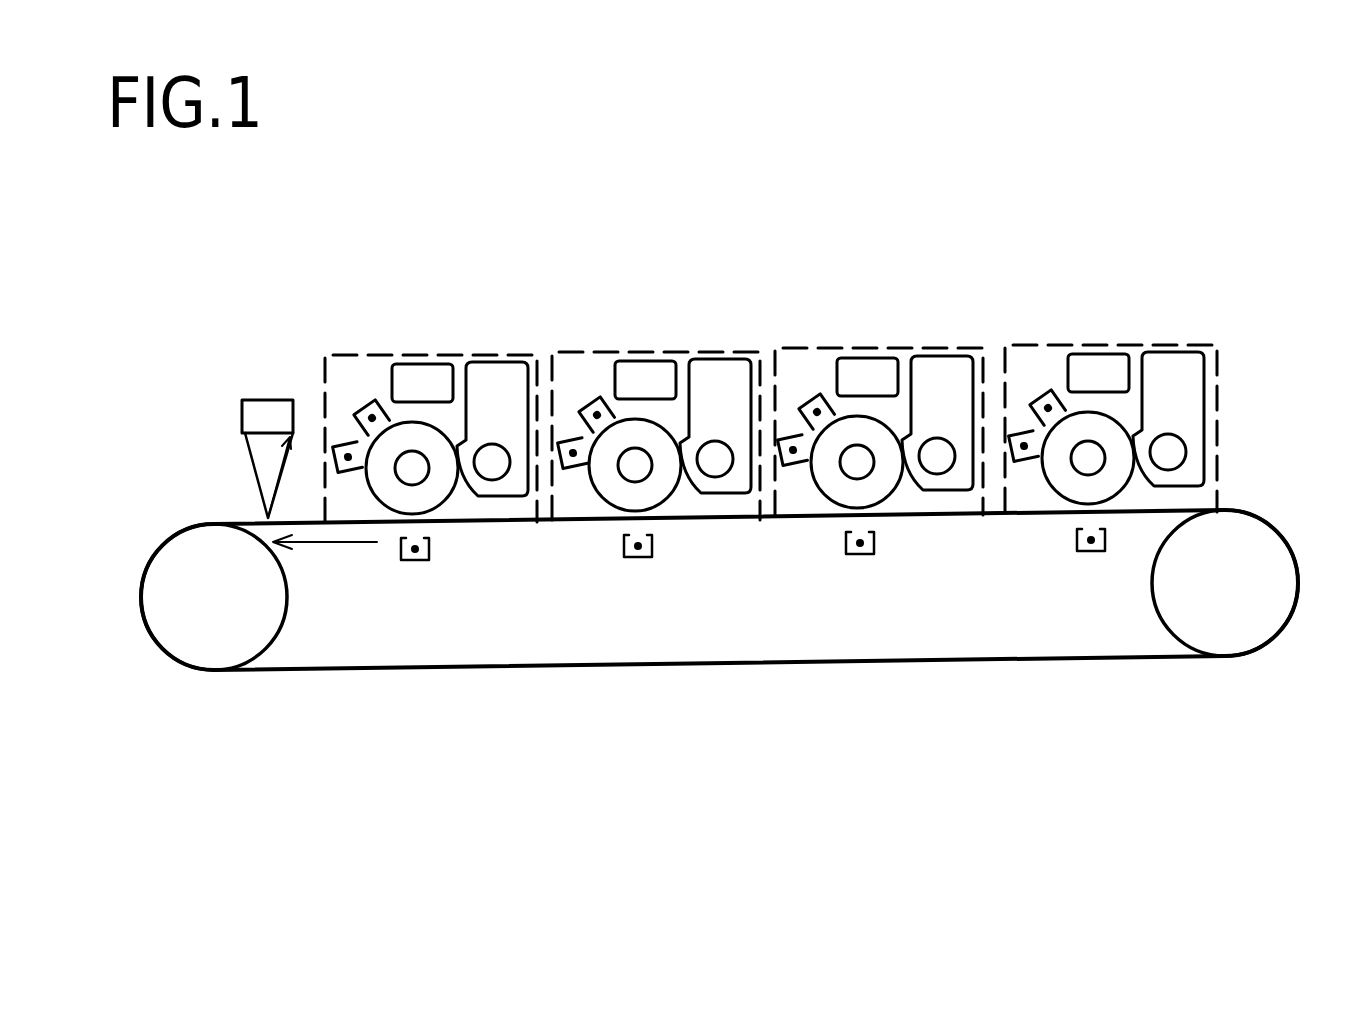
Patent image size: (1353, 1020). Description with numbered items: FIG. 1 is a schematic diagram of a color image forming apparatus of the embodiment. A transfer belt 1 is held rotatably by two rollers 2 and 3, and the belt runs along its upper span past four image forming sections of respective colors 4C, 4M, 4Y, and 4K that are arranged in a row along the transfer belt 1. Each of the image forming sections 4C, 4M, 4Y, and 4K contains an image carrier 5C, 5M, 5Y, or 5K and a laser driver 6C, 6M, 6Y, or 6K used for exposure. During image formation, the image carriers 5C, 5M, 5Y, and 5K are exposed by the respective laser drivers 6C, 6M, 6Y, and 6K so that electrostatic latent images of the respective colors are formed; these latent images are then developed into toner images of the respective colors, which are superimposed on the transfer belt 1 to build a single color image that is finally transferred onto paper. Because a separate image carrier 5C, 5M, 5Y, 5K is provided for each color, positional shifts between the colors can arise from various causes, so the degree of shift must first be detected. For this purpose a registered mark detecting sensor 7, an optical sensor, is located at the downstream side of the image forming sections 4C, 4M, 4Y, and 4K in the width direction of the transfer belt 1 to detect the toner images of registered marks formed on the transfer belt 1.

The transfer belt 1 is at (1083, 658).
The roller 2 is at (190, 630).
The roller 3 is at (1273, 598).
The image forming section 4C is at (430, 353).
The image forming section 4M is at (652, 352).
The image forming section 4Y is at (875, 347).
The image forming section 4K is at (1217, 345).
The image carrier 5C is at (409, 433).
The image carrier 5M is at (633, 430).
The image carrier 5Y is at (856, 430).
The image carrier 5K is at (1088, 430).
The laser driver 6C is at (435, 367).
The laser driver 6M is at (657, 367).
The laser driver 6Y is at (883, 358).
The laser driver 6K is at (1113, 360).
The registered mark detecting sensor 7 is at (259, 418).